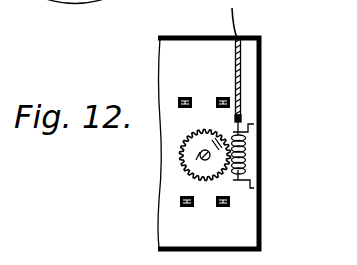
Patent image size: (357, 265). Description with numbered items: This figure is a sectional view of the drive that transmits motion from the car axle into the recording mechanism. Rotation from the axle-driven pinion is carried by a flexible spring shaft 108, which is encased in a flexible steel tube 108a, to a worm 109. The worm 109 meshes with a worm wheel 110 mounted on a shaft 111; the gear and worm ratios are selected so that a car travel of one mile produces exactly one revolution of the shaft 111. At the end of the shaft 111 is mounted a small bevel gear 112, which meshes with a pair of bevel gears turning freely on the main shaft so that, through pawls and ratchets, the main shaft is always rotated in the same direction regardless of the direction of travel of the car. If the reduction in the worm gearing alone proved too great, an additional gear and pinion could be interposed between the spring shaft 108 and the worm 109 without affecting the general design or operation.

The flexible spring shaft 108 is at (233, 12).
The flexible steel tube 108a is at (241, 79).
The worm 109 is at (246, 160).
The small bevel gear 112 is at (182, 145).
The worm wheel 110 is at (205, 155).
The shaft 111 is at (196, 160).